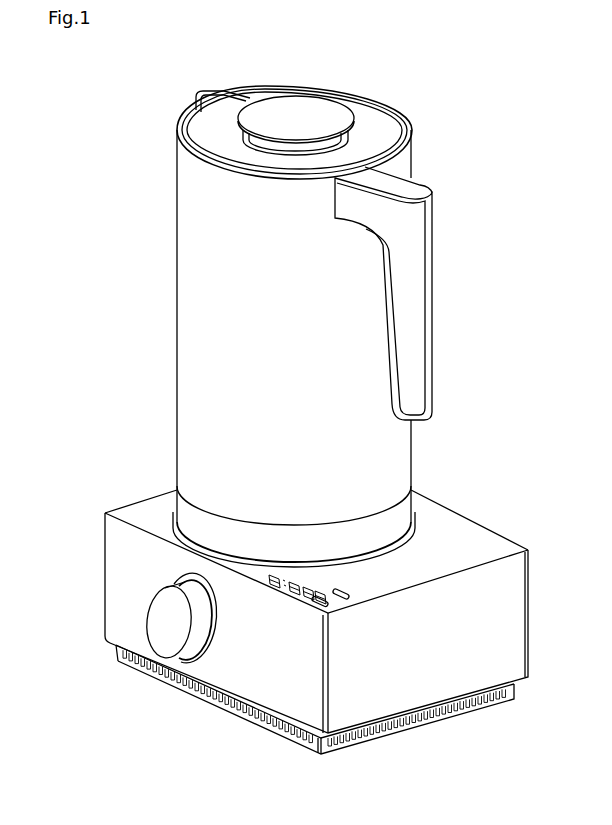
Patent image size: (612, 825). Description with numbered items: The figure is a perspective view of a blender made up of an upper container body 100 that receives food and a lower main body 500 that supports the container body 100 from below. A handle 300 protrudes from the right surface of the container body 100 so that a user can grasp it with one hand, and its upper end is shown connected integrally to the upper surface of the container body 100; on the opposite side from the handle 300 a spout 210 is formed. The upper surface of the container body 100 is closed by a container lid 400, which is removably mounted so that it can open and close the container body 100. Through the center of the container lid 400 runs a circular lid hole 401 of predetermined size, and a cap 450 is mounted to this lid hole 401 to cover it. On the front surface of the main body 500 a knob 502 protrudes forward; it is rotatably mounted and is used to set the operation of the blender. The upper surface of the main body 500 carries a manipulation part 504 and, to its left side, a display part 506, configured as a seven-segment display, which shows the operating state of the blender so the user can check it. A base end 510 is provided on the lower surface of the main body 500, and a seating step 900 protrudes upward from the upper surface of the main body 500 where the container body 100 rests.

The container body 100 is at (150, 305).
The spout 210 is at (210, 102).
The handle 300 is at (450, 282).
The container lid 400 is at (398, 128).
The lid hole 401 is at (350, 136).
The cap 450 is at (304, 90).
The main body 500 is at (507, 522).
The knob 502 is at (157, 615).
The manipulation part 504 is at (313, 603).
The display part 506 is at (272, 582).
The base end 510 is at (173, 686).
The seating step 900 is at (403, 507).